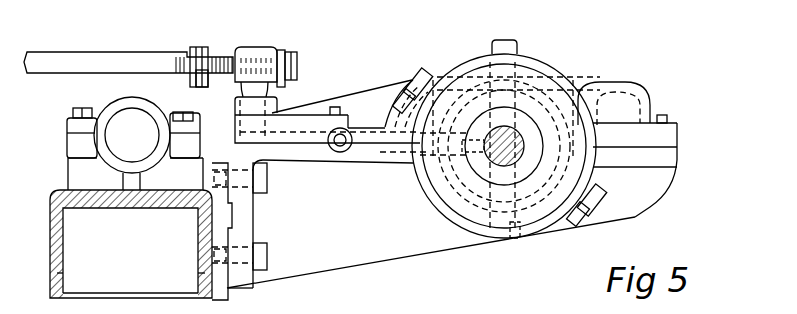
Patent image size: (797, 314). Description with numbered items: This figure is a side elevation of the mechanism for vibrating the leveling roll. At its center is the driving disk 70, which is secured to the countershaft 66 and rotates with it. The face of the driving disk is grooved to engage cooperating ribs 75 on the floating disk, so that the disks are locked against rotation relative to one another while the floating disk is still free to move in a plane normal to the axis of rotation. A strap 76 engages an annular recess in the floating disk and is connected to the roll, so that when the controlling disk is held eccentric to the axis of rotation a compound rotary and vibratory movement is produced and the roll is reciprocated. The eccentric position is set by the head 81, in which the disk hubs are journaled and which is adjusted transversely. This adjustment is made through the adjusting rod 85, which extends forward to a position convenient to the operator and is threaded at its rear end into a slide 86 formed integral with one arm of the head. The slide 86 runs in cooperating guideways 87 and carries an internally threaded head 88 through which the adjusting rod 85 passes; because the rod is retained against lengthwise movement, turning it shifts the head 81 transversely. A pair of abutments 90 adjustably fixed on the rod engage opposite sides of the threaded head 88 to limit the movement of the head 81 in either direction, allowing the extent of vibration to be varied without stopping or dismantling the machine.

The adjusting rod 85 is at (97, 58).
The abutments 90 is at (207, 53).
The internally threaded head 88 is at (262, 50).
The guideways 87 is at (297, 116).
The slide 86 is at (367, 132).
The ribs 75 is at (515, 72).
The driving disk 70 is at (545, 75).
The countershaft 66 is at (512, 137).
The head 81 is at (647, 100).
The strap 76 is at (422, 192).